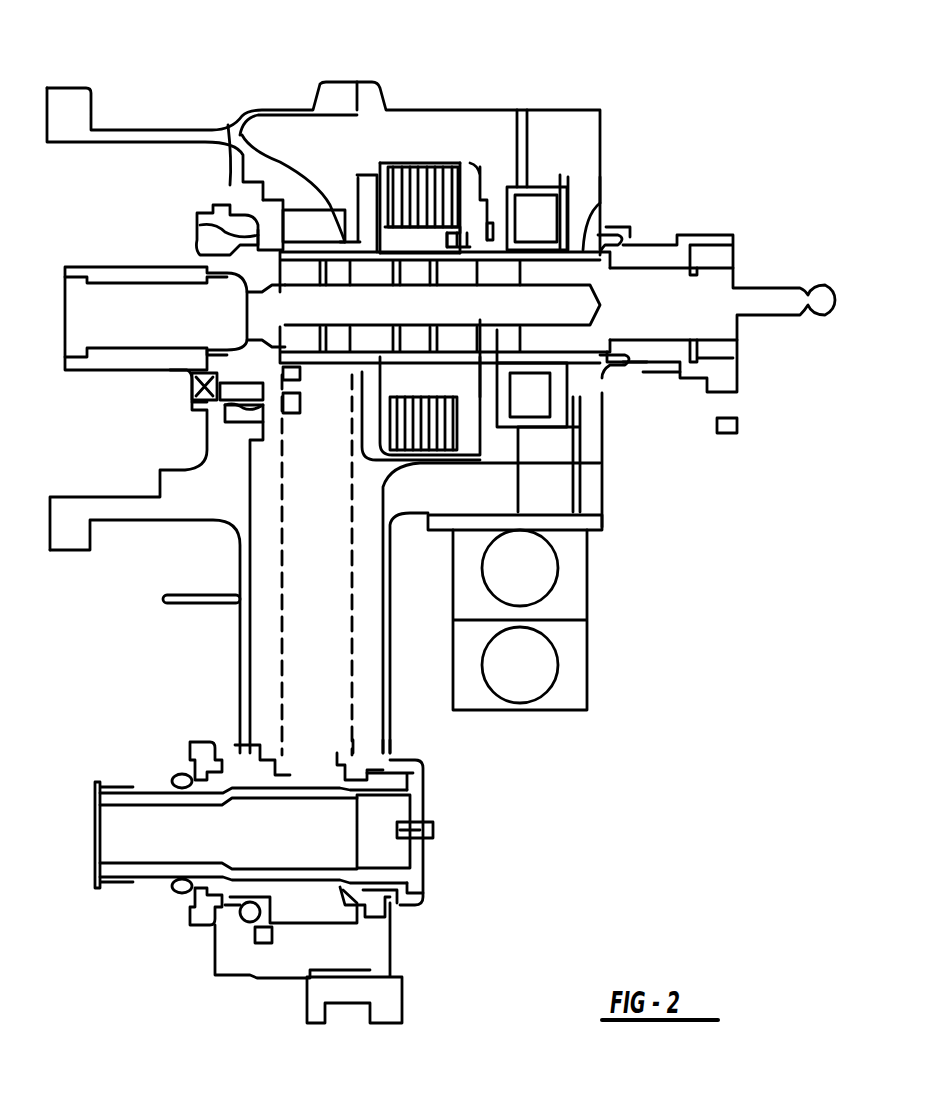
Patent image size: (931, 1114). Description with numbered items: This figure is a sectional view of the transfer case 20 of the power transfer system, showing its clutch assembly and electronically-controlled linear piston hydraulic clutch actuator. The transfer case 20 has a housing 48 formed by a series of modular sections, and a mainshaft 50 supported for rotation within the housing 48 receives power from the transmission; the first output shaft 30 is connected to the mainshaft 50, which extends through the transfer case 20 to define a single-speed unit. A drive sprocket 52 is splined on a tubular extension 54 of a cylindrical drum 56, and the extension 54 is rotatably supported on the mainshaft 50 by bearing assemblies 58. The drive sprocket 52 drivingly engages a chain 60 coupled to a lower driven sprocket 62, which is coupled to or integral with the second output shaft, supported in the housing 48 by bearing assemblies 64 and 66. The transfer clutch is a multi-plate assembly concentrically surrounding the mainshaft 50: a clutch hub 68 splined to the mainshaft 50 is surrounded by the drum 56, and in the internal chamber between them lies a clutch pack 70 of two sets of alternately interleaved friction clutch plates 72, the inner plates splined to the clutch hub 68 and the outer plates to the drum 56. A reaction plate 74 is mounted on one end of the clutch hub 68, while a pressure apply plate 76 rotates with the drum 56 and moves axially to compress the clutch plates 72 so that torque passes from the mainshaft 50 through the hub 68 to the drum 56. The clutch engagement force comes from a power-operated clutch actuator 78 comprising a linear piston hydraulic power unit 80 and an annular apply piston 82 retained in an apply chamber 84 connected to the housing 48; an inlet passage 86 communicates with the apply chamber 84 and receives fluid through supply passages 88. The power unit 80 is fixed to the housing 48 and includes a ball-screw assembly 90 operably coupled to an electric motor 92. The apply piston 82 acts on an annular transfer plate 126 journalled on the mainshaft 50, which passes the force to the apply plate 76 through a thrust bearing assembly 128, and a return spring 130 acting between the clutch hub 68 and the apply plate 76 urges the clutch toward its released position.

The transfer case 20 is at (152, 650).
The first output shaft 30 is at (778, 292).
The housing 48 is at (240, 558).
The mainshaft 50 is at (135, 338).
The drive sprocket 52 is at (297, 227).
The tubular extension 54 is at (230, 250).
The cylindrical drum 56 is at (307, 115).
The bearing assemblies 58 is at (242, 135).
The chain 60 is at (317, 680).
The driven sprocket 62 is at (250, 745).
The bearing assembly 64 is at (215, 940).
The bearing assembly 66 is at (400, 895).
The clutch hub 68 is at (358, 178).
The clutch pack 70 is at (415, 140).
The friction clutch plates 72 is at (470, 163).
The reaction plate 74 is at (378, 182).
The pressure apply plate 76 is at (493, 217).
The power-operated clutch actuator 78 is at (503, 183).
The linear piston hydraulic power unit 80 is at (609, 617).
The apply piston 82 is at (550, 175).
The apply chamber 84 is at (565, 178).
The inlet passage 86 is at (575, 190).
The supply passages 88 is at (577, 457).
The ball-screw assembly 90 is at (530, 568).
The electric motor 92 is at (543, 665).
The transfer plate 126 is at (527, 155).
The thrust bearing assembly 128 is at (570, 247).
The return spring 130 is at (562, 365).